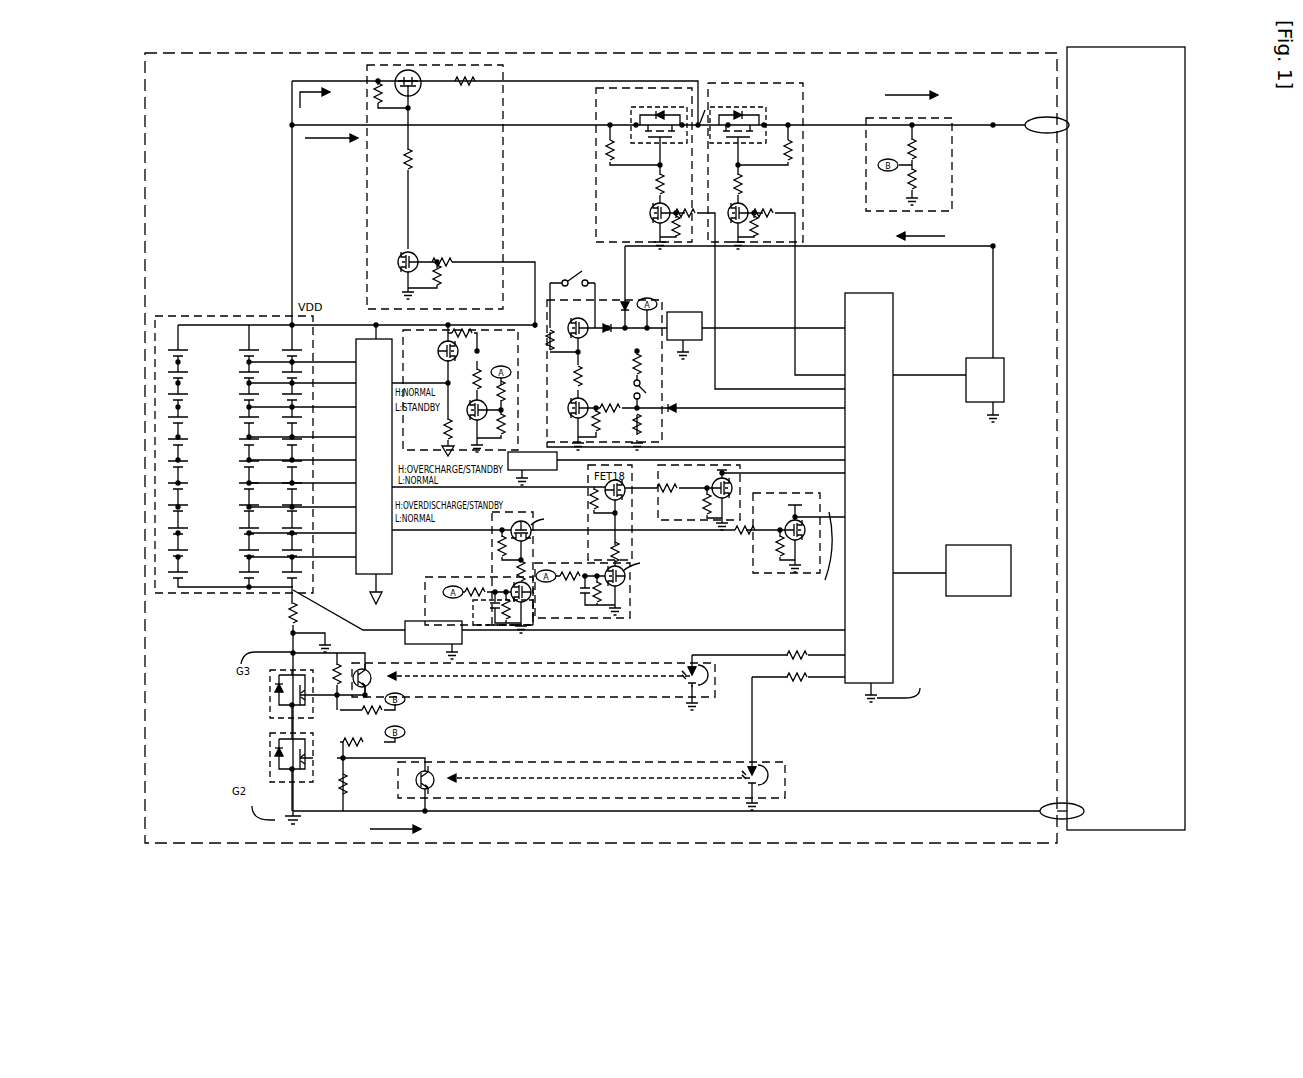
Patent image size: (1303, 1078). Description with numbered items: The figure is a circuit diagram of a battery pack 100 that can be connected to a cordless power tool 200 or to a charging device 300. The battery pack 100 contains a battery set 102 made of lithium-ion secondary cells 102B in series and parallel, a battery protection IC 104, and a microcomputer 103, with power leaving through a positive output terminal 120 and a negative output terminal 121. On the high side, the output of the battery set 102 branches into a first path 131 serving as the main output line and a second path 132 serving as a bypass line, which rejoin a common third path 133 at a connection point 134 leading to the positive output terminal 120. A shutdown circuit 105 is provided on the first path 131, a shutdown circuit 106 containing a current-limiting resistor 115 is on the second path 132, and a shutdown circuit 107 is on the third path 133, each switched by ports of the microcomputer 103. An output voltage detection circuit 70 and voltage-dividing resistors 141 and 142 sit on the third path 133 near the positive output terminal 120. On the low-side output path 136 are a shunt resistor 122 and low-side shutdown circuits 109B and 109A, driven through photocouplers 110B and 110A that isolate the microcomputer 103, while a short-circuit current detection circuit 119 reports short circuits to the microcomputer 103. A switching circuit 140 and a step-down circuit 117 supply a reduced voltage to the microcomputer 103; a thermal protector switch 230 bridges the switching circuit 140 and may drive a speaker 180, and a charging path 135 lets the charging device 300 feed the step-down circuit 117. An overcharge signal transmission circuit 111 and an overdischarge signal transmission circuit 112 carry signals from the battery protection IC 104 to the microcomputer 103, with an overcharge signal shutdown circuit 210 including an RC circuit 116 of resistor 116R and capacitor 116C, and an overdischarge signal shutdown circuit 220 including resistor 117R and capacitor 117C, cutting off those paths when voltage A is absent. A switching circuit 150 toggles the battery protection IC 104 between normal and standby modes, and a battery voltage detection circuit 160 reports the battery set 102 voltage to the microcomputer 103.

The battery pack 100 is at (760, 50).
The battery set 102 is at (255, 425).
The secondary cell 102B is at (307, 352).
The microcomputer 103 is at (878, 293).
The battery protection IC 104 is at (367, 339).
The shutdown circuit 105 is at (596, 160).
The shutdown circuit 106 is at (454, 196).
The shutdown circuit 107 is at (803, 88).
The low-side shutdown circuit 109A is at (272, 764).
The low-side shutdown circuit 109B is at (269, 694).
The photocoupler 110A is at (582, 762).
The photocoupler 110B is at (582, 697).
The overcharge signal transmission circuit 111 is at (658, 483).
The overdischarge signal transmission circuit 112 is at (733, 549).
The resistor 115 is at (467, 88).
The RC circuit 116 is at (677, 610).
The resistor 116R is at (603, 600).
The capacitor 116C is at (588, 604).
The step-down circuit 117 is at (676, 312).
The resistor 117R is at (525, 607).
The capacitor 117C is at (492, 625).
The short-circuit current detection circuit 119 is at (569, 624).
The positive output terminal 120 is at (1047, 116).
The negative output terminal 121 is at (1060, 801).
The shunt resistor 122 is at (272, 617).
The first path 131 is at (331, 144).
The second path 132 is at (315, 98).
The third path 133 is at (911, 102).
The connection point 134 is at (705, 110).
The charging path 135 is at (921, 230).
The low-side output path 136 is at (379, 829).
The switching circuit 140 is at (662, 375).
The resistor 141 is at (909, 164).
The resistor 142 is at (924, 179).
The switching circuit 150 is at (488, 332).
The battery voltage detection circuit 160 is at (676, 463).
The speaker 180 is at (952, 570).
The cordless power tool 200 is at (1185, 326).
The charging device 300 is at (1248, 313).
The overcharge signal shutdown circuit 210 is at (614, 590).
The overdischarge signal shutdown circuit 220 is at (515, 569).
The thermal protector switch 230 is at (553, 274).
The output voltage detection circuit 70 is at (948, 334).